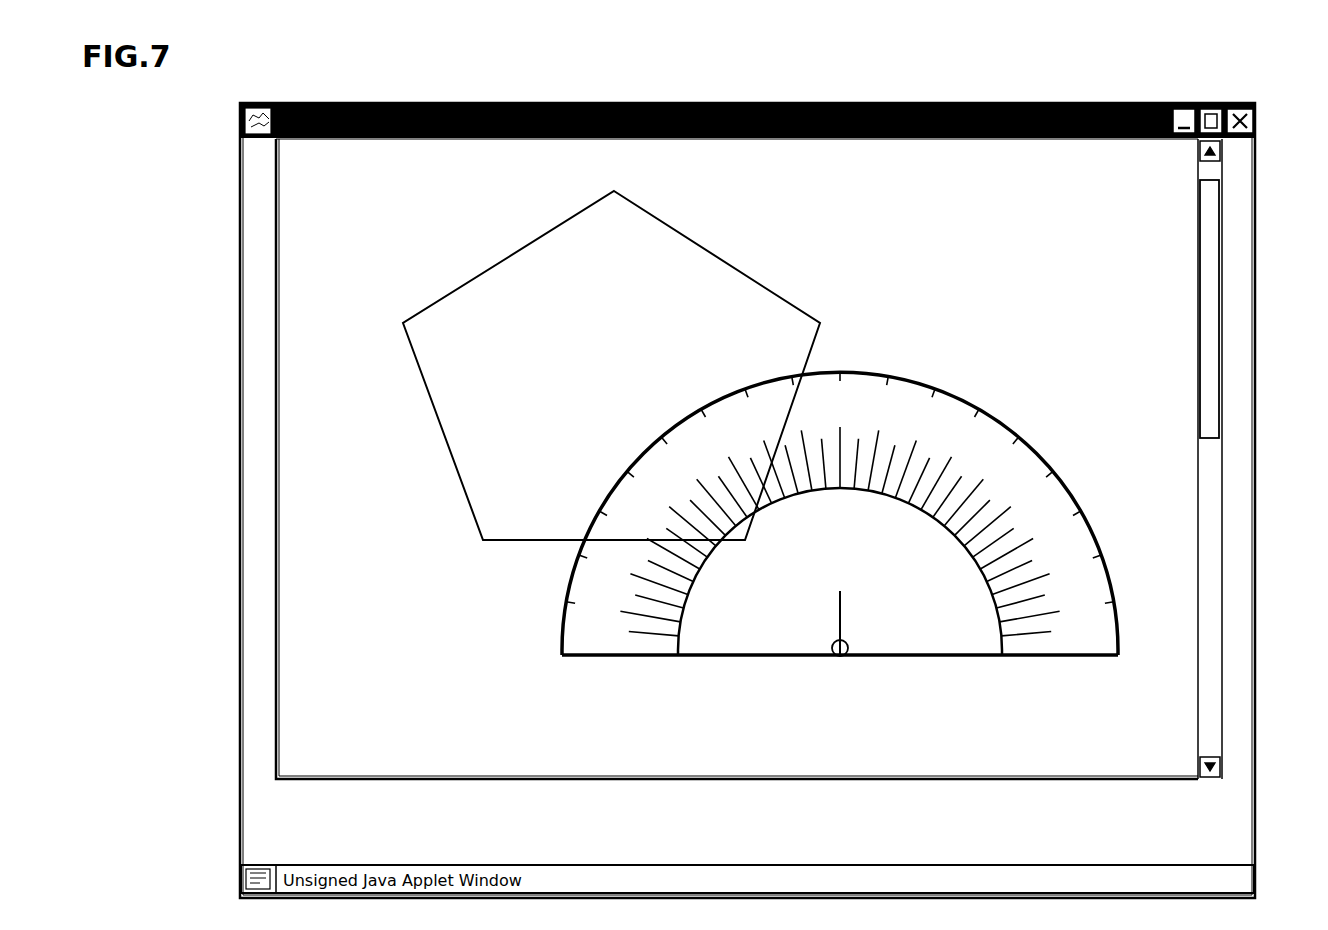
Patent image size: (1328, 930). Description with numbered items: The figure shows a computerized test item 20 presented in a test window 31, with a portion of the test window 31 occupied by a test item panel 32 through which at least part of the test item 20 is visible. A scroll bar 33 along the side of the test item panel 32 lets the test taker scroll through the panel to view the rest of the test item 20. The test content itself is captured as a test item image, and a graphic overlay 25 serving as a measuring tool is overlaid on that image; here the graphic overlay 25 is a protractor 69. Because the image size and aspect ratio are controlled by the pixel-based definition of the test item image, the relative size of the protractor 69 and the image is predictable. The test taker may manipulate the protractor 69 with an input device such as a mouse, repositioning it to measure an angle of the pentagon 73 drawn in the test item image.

The test item 20 is at (863, 168).
The graphic overlay 25 is at (1117, 637).
The test window 31 is at (1075, 102).
The test item panel 32 is at (275, 456).
The scroll bar 33 is at (1218, 283).
The protractor 69 is at (1097, 543).
The pentagon 73 is at (665, 218).